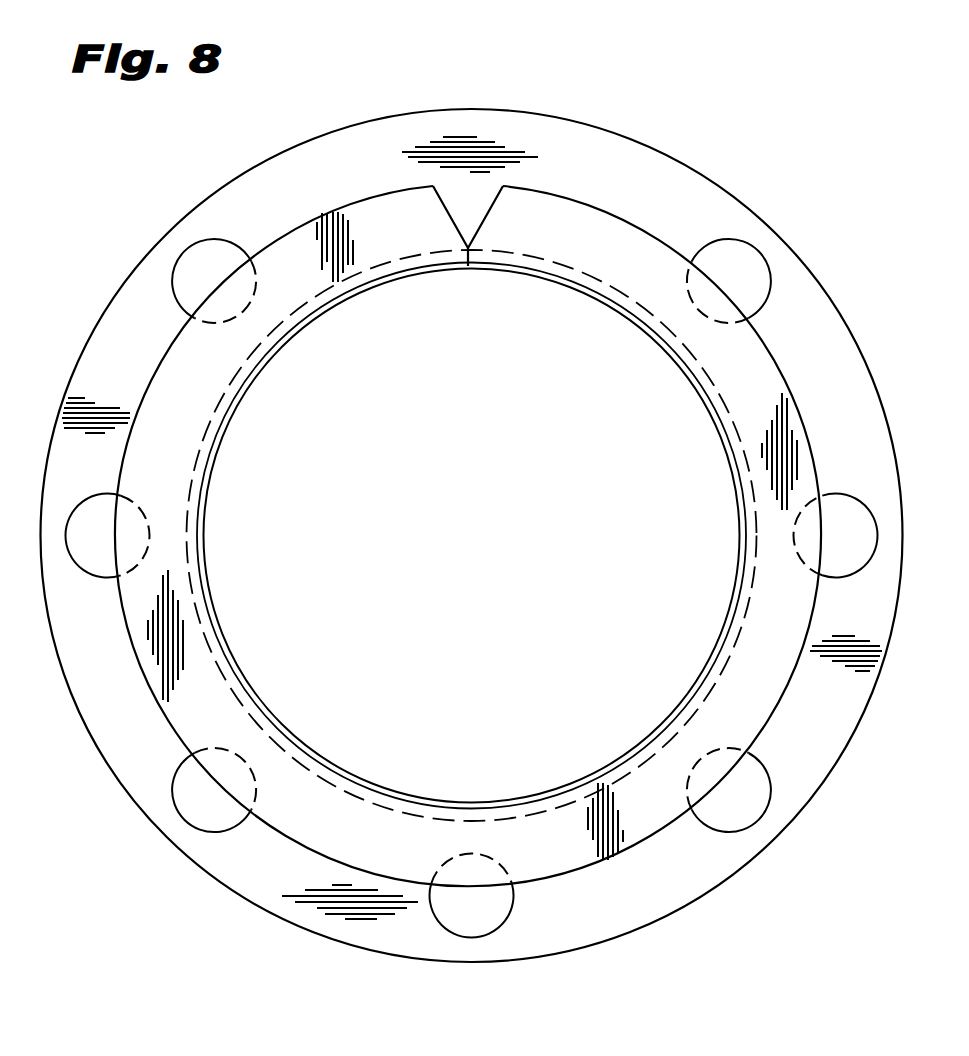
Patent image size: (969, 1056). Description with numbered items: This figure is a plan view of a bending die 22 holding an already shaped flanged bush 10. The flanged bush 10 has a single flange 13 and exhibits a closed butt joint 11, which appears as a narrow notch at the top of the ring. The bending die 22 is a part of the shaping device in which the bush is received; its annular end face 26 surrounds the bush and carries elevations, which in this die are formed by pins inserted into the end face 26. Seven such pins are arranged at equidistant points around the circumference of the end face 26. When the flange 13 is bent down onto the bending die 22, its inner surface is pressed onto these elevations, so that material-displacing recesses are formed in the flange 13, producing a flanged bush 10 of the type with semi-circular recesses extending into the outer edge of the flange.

The flanged bush 10 is at (636, 212).
The butt joint 11 is at (468, 268).
The flange 13 is at (165, 380).
The bending die 22 is at (672, 922).
The end face 26 is at (617, 912).